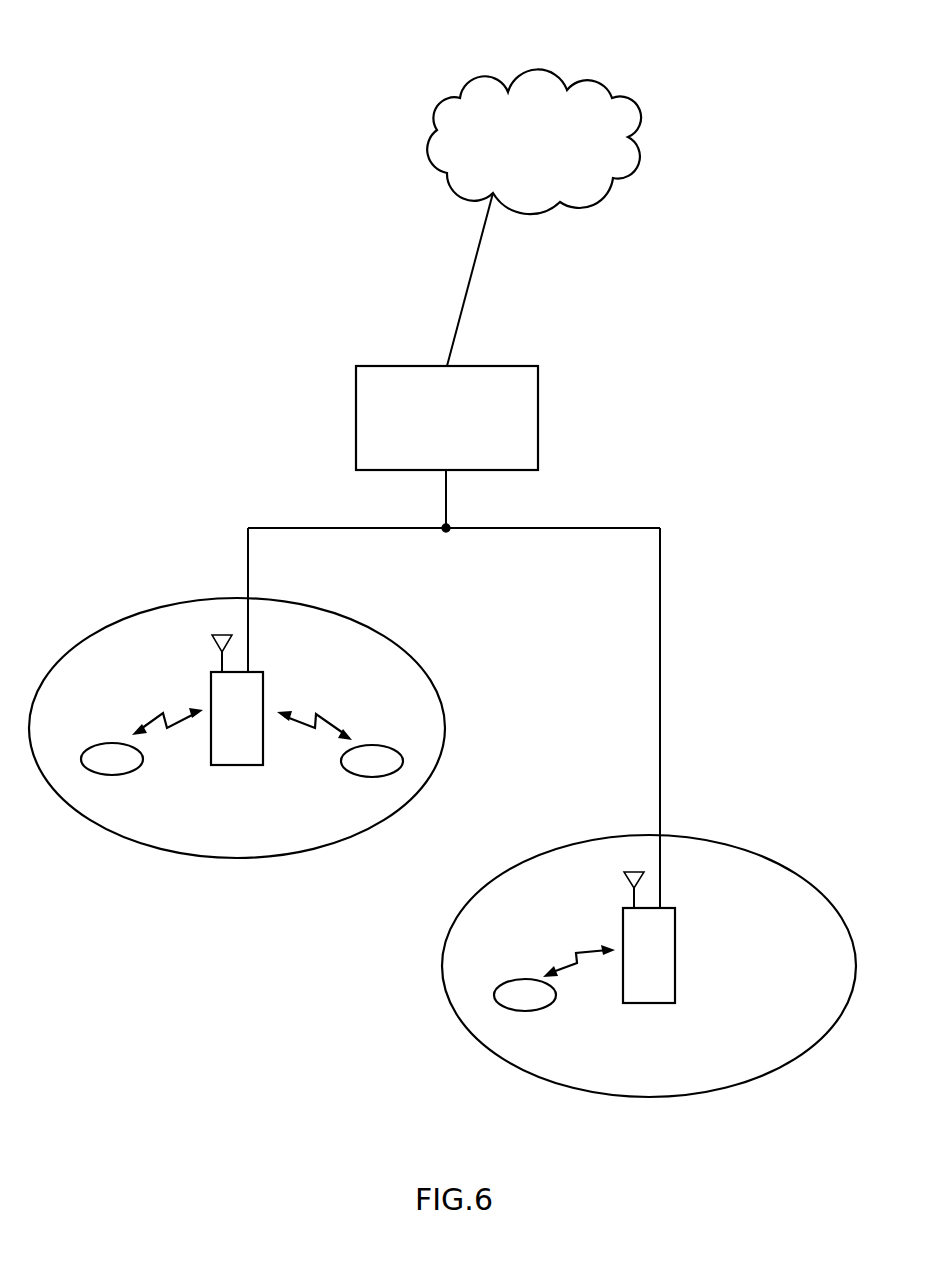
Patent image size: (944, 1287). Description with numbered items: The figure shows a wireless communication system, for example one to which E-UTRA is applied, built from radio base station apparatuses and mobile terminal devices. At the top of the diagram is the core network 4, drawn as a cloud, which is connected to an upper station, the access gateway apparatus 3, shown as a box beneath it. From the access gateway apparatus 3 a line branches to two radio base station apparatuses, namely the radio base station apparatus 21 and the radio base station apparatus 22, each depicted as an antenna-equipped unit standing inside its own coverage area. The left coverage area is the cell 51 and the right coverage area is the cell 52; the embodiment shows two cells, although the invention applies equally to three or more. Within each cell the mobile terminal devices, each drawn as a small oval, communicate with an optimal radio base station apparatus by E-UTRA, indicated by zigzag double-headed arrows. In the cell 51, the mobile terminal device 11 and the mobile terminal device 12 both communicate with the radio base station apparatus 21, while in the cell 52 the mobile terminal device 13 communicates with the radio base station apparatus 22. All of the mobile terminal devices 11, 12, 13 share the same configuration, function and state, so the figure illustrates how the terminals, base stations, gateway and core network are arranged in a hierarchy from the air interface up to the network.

The core network 4 is at (587, 82).
The access gateway apparatus 3 is at (538, 405).
The cell 51 is at (388, 638).
The cell 52 is at (758, 850).
The radio base station apparatus 21 is at (263, 680).
The radio base station apparatus 22 is at (675, 950).
The mobile terminal device 11 is at (125, 773).
The mobile terminal device 12 is at (352, 775).
The mobile terminal device 13 is at (545, 1008).